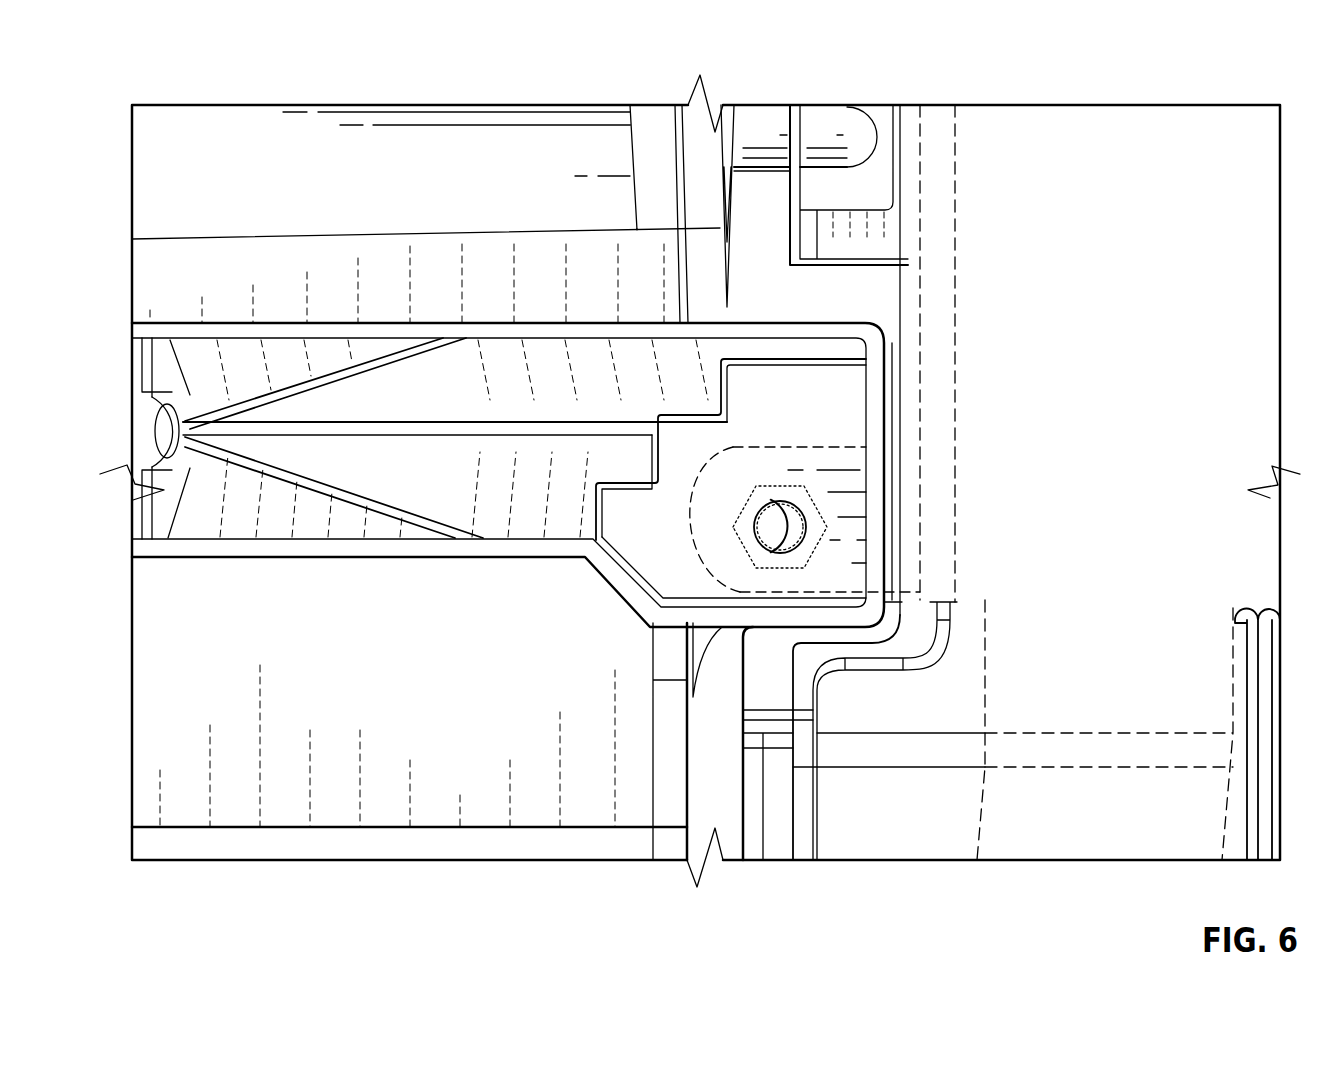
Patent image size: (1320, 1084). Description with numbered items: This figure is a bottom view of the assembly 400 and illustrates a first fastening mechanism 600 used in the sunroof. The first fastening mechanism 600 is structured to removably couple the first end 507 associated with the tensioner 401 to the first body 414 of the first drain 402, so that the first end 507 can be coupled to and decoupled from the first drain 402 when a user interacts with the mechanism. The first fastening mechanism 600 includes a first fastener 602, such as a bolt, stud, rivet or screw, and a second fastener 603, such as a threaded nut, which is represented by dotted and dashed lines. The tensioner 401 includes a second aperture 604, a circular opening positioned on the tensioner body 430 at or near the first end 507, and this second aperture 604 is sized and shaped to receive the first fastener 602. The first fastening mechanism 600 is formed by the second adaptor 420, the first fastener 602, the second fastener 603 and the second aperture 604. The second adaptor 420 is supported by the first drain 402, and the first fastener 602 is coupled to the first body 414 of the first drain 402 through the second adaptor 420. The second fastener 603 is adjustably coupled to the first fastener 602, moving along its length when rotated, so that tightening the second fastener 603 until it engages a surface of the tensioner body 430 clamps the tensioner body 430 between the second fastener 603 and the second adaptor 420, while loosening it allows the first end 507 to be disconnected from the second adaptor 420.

The assembly 400 is at (127, 102).
The tensioner 401 is at (753, 323).
The first drain 402 is at (735, 763).
The first body 414 is at (1105, 391).
The second adaptor 420 is at (694, 505).
The tensioner body 430 is at (337, 464).
The first end 507 is at (886, 490).
The first fastening mechanism 600 is at (940, 434).
The first fastener 602 is at (762, 510).
The second fastener 603 is at (708, 559).
The second aperture 604 is at (783, 558).